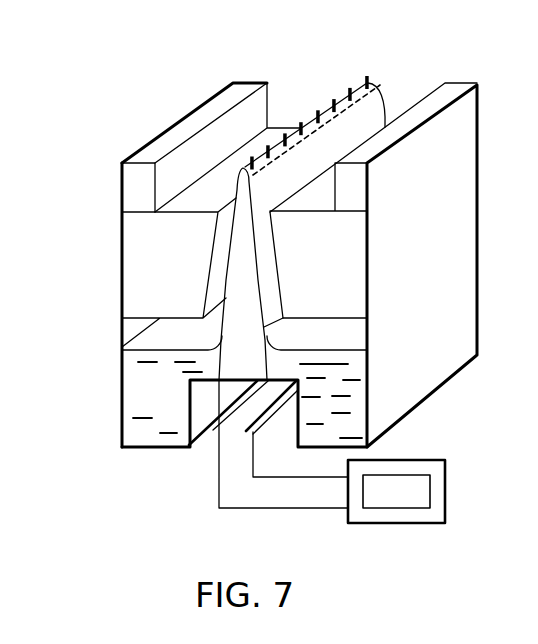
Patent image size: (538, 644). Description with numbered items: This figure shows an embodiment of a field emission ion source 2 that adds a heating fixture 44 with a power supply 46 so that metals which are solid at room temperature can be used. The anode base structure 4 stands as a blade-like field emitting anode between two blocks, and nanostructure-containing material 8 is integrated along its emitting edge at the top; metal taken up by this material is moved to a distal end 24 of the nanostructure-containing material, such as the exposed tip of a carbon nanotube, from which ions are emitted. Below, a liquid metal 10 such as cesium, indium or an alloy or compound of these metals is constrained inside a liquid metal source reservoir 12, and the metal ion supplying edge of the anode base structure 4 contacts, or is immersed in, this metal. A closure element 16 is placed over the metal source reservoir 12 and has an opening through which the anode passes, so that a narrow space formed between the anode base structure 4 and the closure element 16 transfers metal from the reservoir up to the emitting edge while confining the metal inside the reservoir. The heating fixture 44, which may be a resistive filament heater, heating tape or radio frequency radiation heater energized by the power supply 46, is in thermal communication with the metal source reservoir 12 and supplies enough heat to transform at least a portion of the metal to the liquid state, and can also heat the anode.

The field emission ion source 2 is at (158, 107).
The anode base structure 4 is at (239, 274).
The nanostructure-containing material 8 is at (303, 120).
The distal end 24 is at (308, 113).
The closure element 16 is at (157, 274).
The liquid metal 10 is at (145, 402).
The liquid metal source reservoir 12 is at (125, 433).
The heating fixture 44 is at (208, 440).
The power supply 46 is at (385, 504).